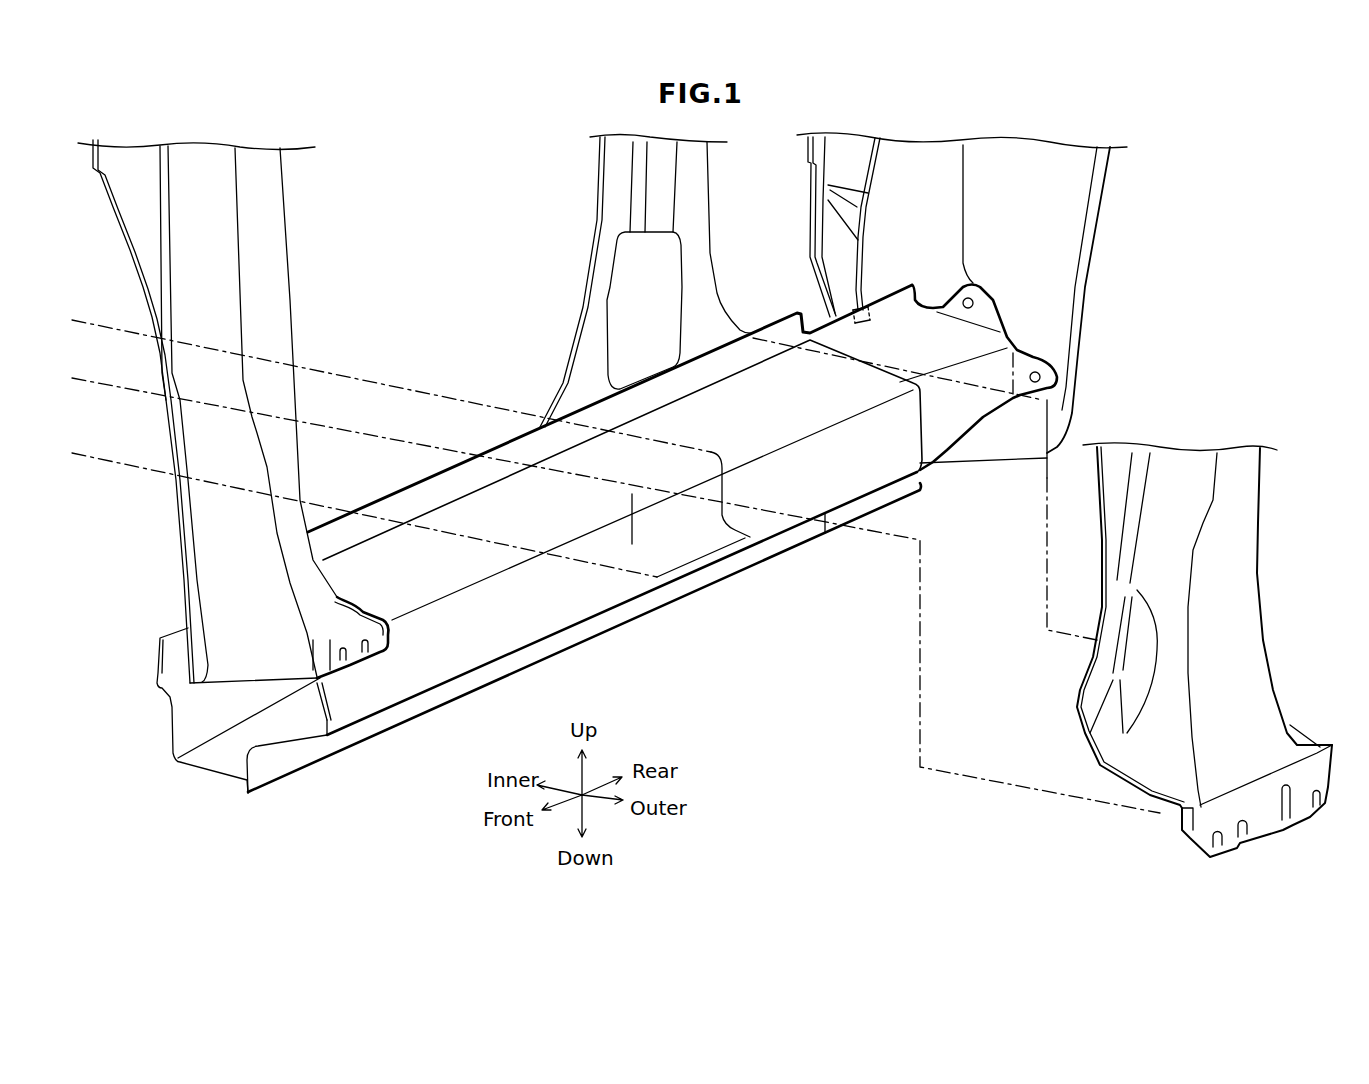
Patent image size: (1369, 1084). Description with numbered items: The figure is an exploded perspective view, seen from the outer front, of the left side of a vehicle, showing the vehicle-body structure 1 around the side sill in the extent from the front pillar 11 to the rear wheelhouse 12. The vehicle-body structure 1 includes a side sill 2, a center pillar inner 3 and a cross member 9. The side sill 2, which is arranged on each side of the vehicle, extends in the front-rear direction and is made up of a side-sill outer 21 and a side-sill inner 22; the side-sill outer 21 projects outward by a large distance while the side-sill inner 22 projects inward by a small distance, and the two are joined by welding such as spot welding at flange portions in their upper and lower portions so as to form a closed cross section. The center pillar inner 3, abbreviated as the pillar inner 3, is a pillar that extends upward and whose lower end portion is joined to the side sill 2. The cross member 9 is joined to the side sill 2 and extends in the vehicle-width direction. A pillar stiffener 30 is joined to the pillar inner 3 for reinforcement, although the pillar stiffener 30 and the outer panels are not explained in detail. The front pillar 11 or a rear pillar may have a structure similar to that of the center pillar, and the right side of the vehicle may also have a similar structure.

The vehicle-body structure 1 is at (1170, 253).
The side sill 2 is at (532, 698).
The center pillar inner 3 is at (583, 310).
The cross member 9 is at (385, 413).
The front pillar 11 is at (282, 253).
The rear wheelhouse 12 is at (1087, 310).
The side-sill outer 21 is at (347, 700).
The side-sill inner 22 is at (177, 713).
The pillar stiffener 30 is at (1250, 577).